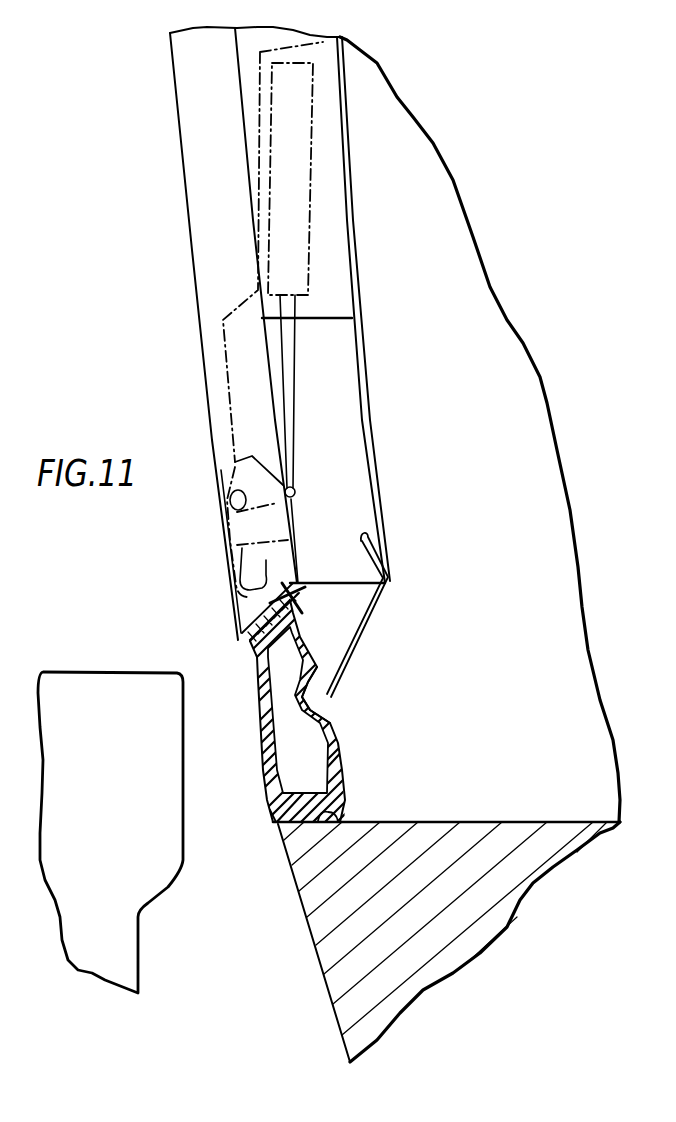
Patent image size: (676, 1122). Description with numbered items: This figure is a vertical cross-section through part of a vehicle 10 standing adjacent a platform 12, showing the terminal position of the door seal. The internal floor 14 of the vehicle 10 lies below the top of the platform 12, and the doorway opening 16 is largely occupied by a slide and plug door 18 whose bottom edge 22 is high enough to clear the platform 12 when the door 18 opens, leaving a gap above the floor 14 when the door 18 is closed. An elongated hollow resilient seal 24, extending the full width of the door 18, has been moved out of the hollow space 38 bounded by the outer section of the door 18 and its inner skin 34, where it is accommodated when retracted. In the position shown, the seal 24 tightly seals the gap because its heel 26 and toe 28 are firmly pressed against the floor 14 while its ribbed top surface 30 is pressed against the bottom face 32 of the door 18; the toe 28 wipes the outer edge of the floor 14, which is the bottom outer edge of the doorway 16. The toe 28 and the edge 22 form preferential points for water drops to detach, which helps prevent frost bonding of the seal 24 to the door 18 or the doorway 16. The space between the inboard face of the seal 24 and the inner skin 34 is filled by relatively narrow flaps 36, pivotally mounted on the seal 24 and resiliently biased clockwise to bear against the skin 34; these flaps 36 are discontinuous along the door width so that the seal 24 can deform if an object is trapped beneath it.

The vehicle 10 is at (435, 301).
The platform 12 is at (117, 798).
The floor 14 is at (568, 818).
The doorway opening 16 is at (180, 298).
The door 18 is at (193, 153).
The bottom edge 22 is at (247, 642).
The seal 24 is at (333, 705).
The heel 26 is at (338, 820).
The toe 28 is at (275, 828).
The ribbed top surface 30 is at (283, 597).
The bottom face 32 is at (290, 582).
The inner skin 34 is at (370, 412).
The flaps 36 is at (363, 622).
The hollow space 38 is at (340, 457).